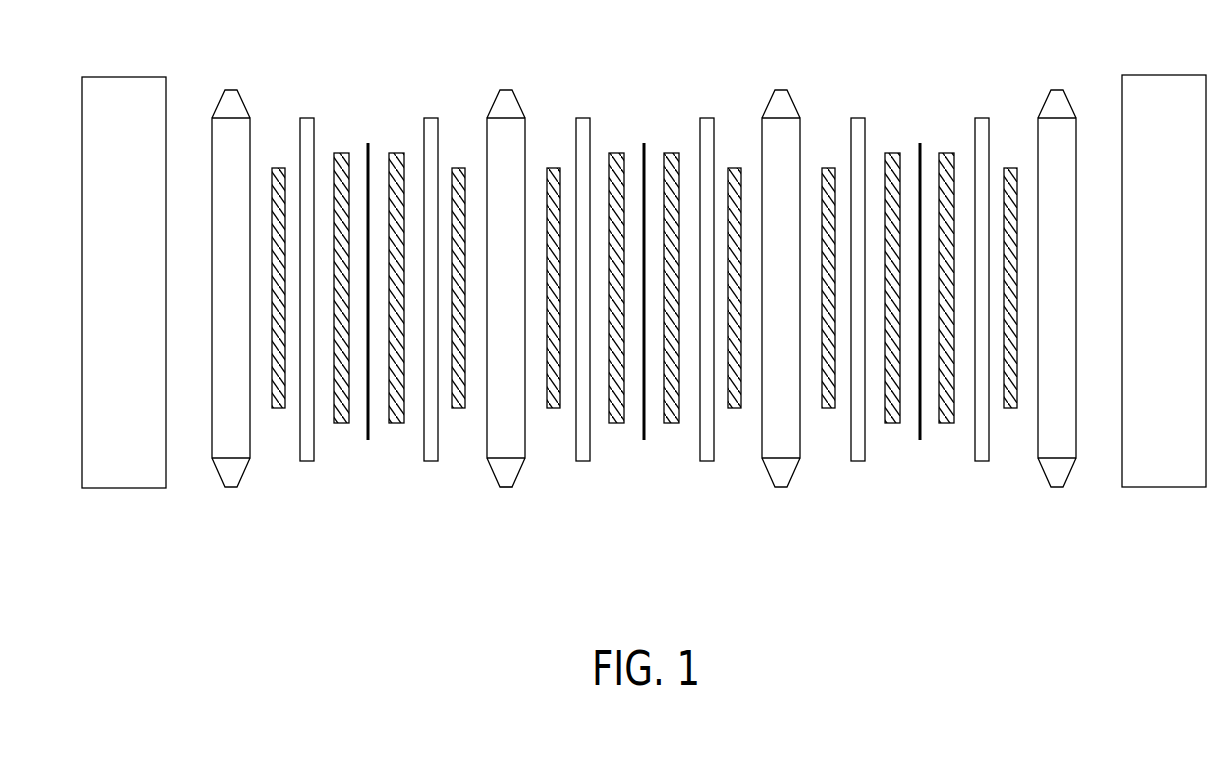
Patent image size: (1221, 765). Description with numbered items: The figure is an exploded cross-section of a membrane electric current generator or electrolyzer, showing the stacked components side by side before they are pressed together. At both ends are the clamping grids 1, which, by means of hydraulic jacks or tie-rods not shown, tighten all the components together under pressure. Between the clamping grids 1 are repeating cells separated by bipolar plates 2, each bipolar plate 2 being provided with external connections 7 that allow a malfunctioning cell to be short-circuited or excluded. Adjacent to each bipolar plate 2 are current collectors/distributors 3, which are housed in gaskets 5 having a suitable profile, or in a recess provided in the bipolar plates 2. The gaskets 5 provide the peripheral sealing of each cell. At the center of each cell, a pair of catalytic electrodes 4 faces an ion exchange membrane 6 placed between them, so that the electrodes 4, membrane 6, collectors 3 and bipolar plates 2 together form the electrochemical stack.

The clamping grids 1 is at (122, 452).
The bipolar plates 2 is at (228, 445).
The current collectors/distributors 3 is at (276, 408).
The catalytic electrodes 4 is at (396, 153).
The gaskets 5 is at (308, 118).
The ion exchange membranes 6 is at (368, 440).
The external connections 7 is at (507, 478).